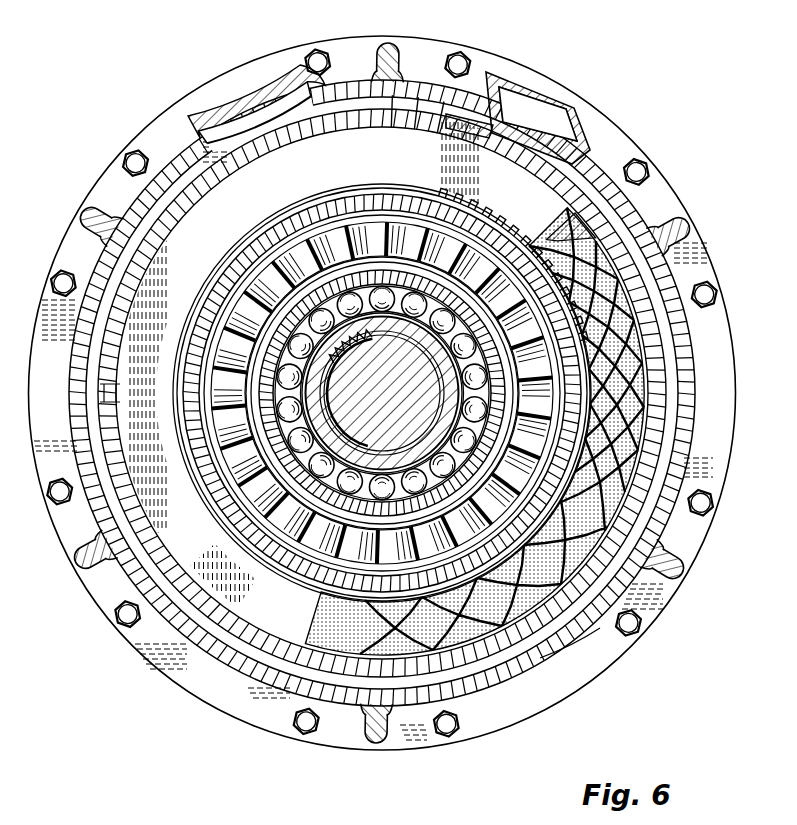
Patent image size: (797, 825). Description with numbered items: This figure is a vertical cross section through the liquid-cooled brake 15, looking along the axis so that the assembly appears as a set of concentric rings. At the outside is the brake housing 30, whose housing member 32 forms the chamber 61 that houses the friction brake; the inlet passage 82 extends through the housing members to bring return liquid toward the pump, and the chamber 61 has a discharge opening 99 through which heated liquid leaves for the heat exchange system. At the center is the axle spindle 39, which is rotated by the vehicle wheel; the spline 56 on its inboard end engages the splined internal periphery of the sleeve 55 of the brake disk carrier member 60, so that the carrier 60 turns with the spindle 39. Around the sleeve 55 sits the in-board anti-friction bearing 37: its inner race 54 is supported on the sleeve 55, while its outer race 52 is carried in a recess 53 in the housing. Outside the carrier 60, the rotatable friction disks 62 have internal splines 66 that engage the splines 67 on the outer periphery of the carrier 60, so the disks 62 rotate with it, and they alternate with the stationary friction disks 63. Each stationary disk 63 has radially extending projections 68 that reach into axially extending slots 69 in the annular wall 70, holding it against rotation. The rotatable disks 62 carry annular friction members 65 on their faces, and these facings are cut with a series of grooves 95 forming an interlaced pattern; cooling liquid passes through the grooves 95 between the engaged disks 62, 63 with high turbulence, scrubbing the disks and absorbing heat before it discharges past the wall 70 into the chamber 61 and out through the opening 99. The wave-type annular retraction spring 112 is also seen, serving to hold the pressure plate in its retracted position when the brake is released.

The brake 15 is at (186, 108).
The brake housing 30 is at (130, 213).
The brake housing member 32 is at (103, 260).
The in-board anti-friction bearing 37 is at (410, 356).
The axle spindle 39 is at (337, 393).
The outer race 52 is at (360, 273).
The recess 53 is at (400, 283).
The inner race 54 is at (450, 411).
The sleeve 55 is at (368, 458).
The spline 56 is at (340, 343).
The brake disk carrier member 60 is at (320, 198).
The chamber 61 is at (345, 103).
The rotatable friction disks 62 is at (522, 638).
The stationary friction disks 63 is at (253, 616).
The friction member 65 is at (560, 638).
The internal splines 66 is at (520, 243).
The splines 67 is at (480, 236).
The radially extending projections 68 is at (435, 116).
The axially extending slots 69 is at (458, 128).
The annular wall 70 is at (615, 230).
The inlet passage 82 is at (545, 116).
The grooves 95 is at (625, 383).
The discharge opening 99 is at (229, 108).
The retraction spring 112 is at (232, 460).